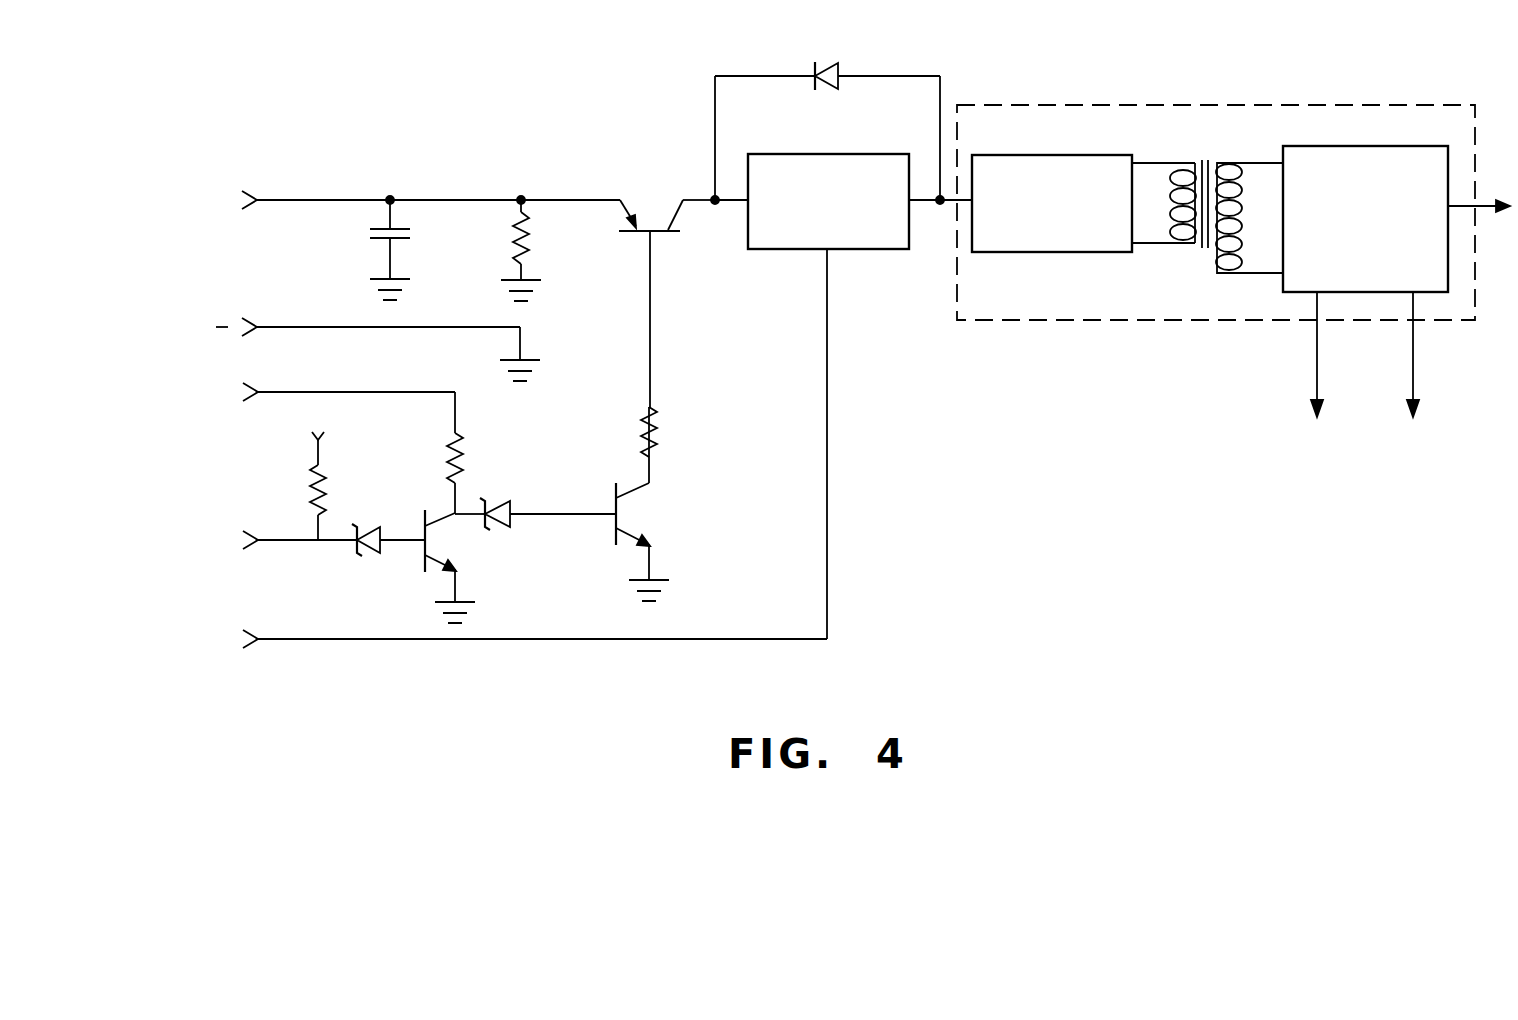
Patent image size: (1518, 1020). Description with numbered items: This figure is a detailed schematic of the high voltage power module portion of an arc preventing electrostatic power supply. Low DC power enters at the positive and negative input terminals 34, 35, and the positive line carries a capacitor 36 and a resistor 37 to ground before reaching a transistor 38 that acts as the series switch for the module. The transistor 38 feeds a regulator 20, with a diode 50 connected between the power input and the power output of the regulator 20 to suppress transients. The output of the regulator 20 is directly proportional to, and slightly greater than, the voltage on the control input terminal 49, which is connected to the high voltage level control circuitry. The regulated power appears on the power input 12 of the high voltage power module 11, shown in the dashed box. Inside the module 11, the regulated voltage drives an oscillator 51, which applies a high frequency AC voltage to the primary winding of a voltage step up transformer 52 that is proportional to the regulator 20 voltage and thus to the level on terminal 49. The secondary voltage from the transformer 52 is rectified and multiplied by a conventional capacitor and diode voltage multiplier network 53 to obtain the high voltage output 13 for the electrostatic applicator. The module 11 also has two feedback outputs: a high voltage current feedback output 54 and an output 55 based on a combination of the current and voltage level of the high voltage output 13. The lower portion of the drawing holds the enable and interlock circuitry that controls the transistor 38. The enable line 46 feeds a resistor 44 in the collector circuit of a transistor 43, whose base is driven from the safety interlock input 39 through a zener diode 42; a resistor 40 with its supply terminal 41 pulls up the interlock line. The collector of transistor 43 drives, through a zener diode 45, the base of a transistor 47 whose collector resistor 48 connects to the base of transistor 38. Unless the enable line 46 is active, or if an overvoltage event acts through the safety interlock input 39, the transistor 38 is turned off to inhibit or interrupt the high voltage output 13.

The positive input terminal 34 is at (255, 196).
The negative input terminal 35 is at (255, 323).
The filter capacitor 36 is at (400, 240).
The resistor 37 is at (528, 243).
The transistor 38 is at (668, 234).
The regulator 20 is at (878, 250).
The diode 50 is at (840, 70).
The power input 12 is at (940, 208).
The high voltage power module 11 is at (1015, 322).
The oscillator 51 is at (1052, 252).
The voltage step up transformer 52 is at (1200, 250).
The voltage multiplier network 53 is at (1312, 146).
The output 13 is at (1484, 210).
The high voltage current feedback output 54 is at (1315, 378).
The output 55 is at (1415, 378).
The enable line 46 is at (262, 396).
The safety interlock input 39 is at (258, 544).
The pull-up resistor 40 is at (328, 470).
The resistor supply terminal 41 is at (312, 443).
The zener diode 42 is at (367, 556).
The transistor 43 is at (420, 515).
The resistor 44 is at (465, 457).
The zener diode 45 is at (502, 530).
The transistor 47 is at (612, 495).
The resistor 48 is at (658, 428).
The control input terminal 49 is at (258, 644).